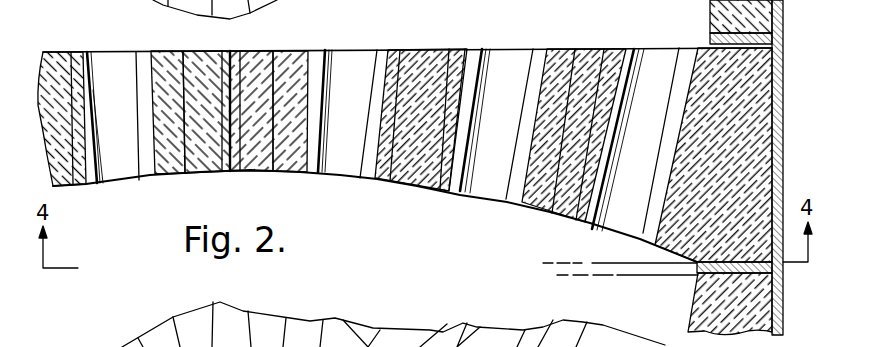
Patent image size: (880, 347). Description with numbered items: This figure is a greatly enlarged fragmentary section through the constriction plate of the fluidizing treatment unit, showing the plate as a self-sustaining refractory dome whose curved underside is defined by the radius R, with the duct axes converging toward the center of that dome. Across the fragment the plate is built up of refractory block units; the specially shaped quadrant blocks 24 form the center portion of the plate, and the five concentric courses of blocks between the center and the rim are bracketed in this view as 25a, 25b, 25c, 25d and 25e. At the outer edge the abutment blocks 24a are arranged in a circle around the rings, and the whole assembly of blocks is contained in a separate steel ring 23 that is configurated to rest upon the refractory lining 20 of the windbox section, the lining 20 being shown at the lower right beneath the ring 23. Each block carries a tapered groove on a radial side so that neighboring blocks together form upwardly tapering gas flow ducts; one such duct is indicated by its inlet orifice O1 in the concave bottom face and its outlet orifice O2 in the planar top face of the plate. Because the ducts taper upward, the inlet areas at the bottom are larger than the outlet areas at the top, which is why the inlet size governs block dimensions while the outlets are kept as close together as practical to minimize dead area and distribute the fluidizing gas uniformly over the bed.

The refractory lining 20 is at (707, 298).
The steel ring 23 is at (780, 88).
The quadrant blocks 24 is at (199, 31).
The abutment blocks 24a is at (755, 112).
The segment 25a is at (708, 45).
The segment 25b is at (625, 45).
The segment 25c is at (545, 45).
The segment 25d is at (463, 45).
The segment 25e is at (385, 45).
The radius R is at (416, 194).
The inlet orifice O1 is at (114, 174).
The outlet orifice O2 is at (102, 58).